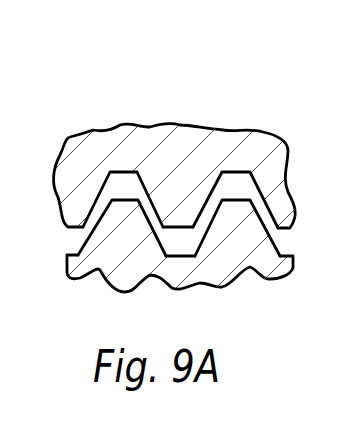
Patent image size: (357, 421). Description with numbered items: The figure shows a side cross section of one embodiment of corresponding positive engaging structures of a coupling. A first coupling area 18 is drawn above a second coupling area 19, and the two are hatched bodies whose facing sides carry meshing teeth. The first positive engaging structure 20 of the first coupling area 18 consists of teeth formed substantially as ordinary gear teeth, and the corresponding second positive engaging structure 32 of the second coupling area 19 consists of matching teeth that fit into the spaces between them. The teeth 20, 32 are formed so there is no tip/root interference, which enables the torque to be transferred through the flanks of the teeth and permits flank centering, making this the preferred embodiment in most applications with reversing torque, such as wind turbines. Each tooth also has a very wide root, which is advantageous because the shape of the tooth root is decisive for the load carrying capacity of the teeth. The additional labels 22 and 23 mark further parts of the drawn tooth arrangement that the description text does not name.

The first coupling area 18 is at (180, 203).
The second coupling area 19 is at (230, 263).
The first positive engaging structure 20 is at (203, 190).
The projection of second body 22 is at (127, 222).
The gap between bodies 23 is at (183, 240).
The second positive engaging structure 32 is at (230, 223).